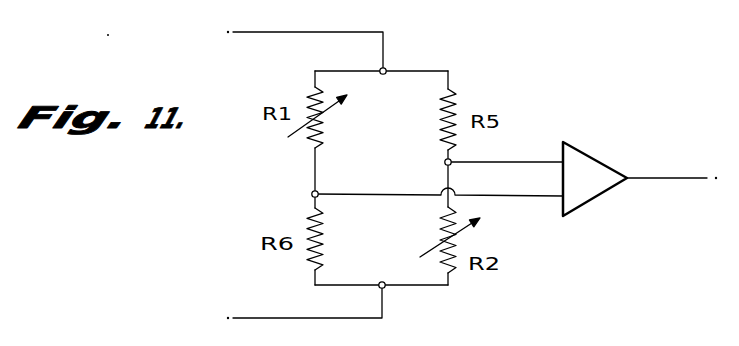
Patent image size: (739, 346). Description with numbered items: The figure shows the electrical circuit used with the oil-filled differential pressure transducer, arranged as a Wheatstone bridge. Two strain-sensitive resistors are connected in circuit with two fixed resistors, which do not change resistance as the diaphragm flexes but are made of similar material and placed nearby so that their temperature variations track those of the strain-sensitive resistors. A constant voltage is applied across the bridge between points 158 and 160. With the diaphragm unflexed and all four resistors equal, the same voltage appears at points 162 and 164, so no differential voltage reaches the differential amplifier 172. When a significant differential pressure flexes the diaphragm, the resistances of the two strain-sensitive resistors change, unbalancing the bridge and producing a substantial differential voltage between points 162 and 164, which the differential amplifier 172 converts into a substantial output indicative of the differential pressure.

The point 158 is at (385, 70).
The point 160 is at (384, 288).
The point 162 is at (445, 162).
The point 164 is at (312, 193).
The differential amplifier 172 is at (598, 163).